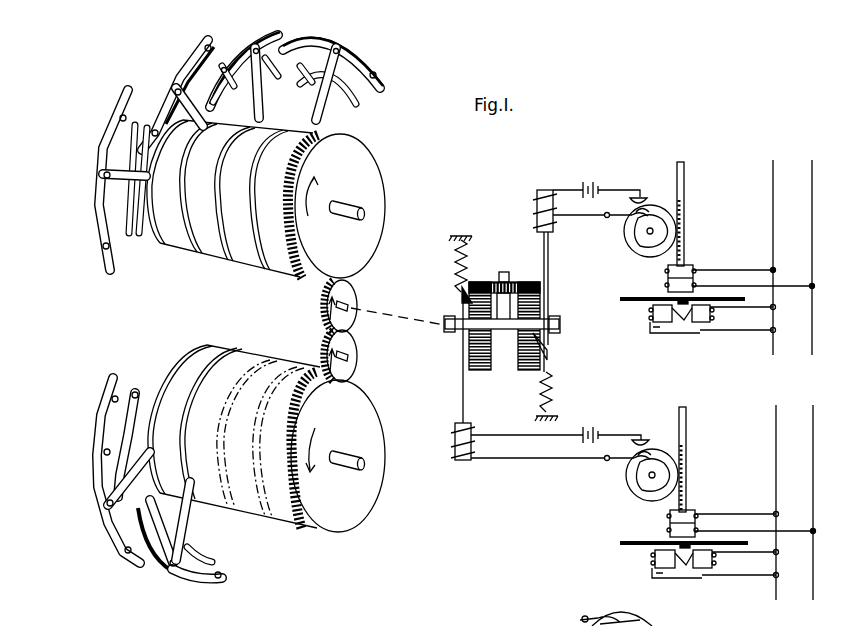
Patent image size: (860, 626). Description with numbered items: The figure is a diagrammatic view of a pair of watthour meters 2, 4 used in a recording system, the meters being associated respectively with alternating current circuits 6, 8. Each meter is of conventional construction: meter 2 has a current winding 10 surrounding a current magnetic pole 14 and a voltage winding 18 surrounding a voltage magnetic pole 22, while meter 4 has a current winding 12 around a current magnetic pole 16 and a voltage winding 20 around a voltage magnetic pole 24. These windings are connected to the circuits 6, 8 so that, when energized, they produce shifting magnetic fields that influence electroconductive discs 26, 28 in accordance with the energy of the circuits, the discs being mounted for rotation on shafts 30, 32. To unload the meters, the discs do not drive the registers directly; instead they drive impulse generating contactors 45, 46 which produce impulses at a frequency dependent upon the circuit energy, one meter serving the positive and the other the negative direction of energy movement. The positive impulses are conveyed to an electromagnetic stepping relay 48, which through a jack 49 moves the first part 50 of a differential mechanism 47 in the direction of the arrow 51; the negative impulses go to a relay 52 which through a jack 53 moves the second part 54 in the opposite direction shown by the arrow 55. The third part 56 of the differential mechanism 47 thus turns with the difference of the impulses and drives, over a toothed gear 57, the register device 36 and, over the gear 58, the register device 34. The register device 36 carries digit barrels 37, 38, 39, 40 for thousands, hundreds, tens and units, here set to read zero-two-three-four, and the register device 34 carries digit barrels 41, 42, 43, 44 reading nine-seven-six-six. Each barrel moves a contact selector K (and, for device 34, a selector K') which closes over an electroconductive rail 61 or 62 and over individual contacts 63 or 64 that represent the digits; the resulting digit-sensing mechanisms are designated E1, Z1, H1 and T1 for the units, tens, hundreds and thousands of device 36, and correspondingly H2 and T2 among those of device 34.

The watthour meter 2 is at (727, 194).
The watthour meter 4 is at (732, 433).
The alternating current circuit 6 is at (798, 235).
The alternating current circuit 8 is at (801, 470).
The current winding 10 is at (722, 332).
The current winding 12 is at (722, 580).
The current magnetic pole 14 is at (665, 328).
The current magnetic pole 16 is at (668, 574).
The voltage winding 18 is at (720, 270).
The voltage winding 20 is at (726, 514).
The voltage magnetic pole 22 is at (684, 270).
The voltage magnetic pole 24 is at (690, 512).
The electroconductive disc 26 is at (634, 301).
The electroconductive disc 28 is at (634, 545).
The shaft 30 is at (684, 175).
The shaft 32 is at (686, 416).
The register device 34 is at (264, 444).
The register device 36 is at (273, 202).
The digit barrel 37 is at (160, 237).
The digit barrel 38 is at (206, 250).
The digit barrel 39 is at (250, 262).
The digit barrel 40 is at (290, 270).
The digit barrel 41 is at (158, 496).
The digit barrel 42 is at (238, 512).
The digit barrel 43 is at (260, 514).
The digit barrel 44 is at (290, 522).
The impulse generating contactor 45 is at (634, 179).
The impulse generating contactor 46 is at (620, 493).
The differential mechanism 47 is at (504, 315).
The electromagnetic stepping relay 48 is at (536, 452).
The jack 49 is at (457, 308).
The first part of differential mechanism 50 is at (480, 370).
The arrow 51 is at (493, 350).
The relay 52 is at (516, 214).
The jack 53 is at (553, 348).
The second part of differential mechanism 54 is at (530, 282).
The arrow 55 is at (518, 356).
The third part of differential mechanism 56 is at (498, 280).
The toothed gear 57 is at (357, 290).
The gear 58 is at (357, 350).
The electroconductive rail 61 is at (224, 66).
The electroconductive rail 62 is at (138, 393).
The individual contacts 63 is at (382, 70).
The individual contacts 64 is at (112, 400).
The thousands digit-sensing device T1 is at (103, 172).
The hundreds digit-sensing device H1 is at (204, 126).
The tens digit-sensing device Z1 is at (264, 106).
The units digit-sensing device E1 is at (328, 120).
The contact selector K is at (196, 104).
The thousands digit-sensing device T2 is at (140, 462).
The hundreds digit-sensing device H2 is at (200, 512).